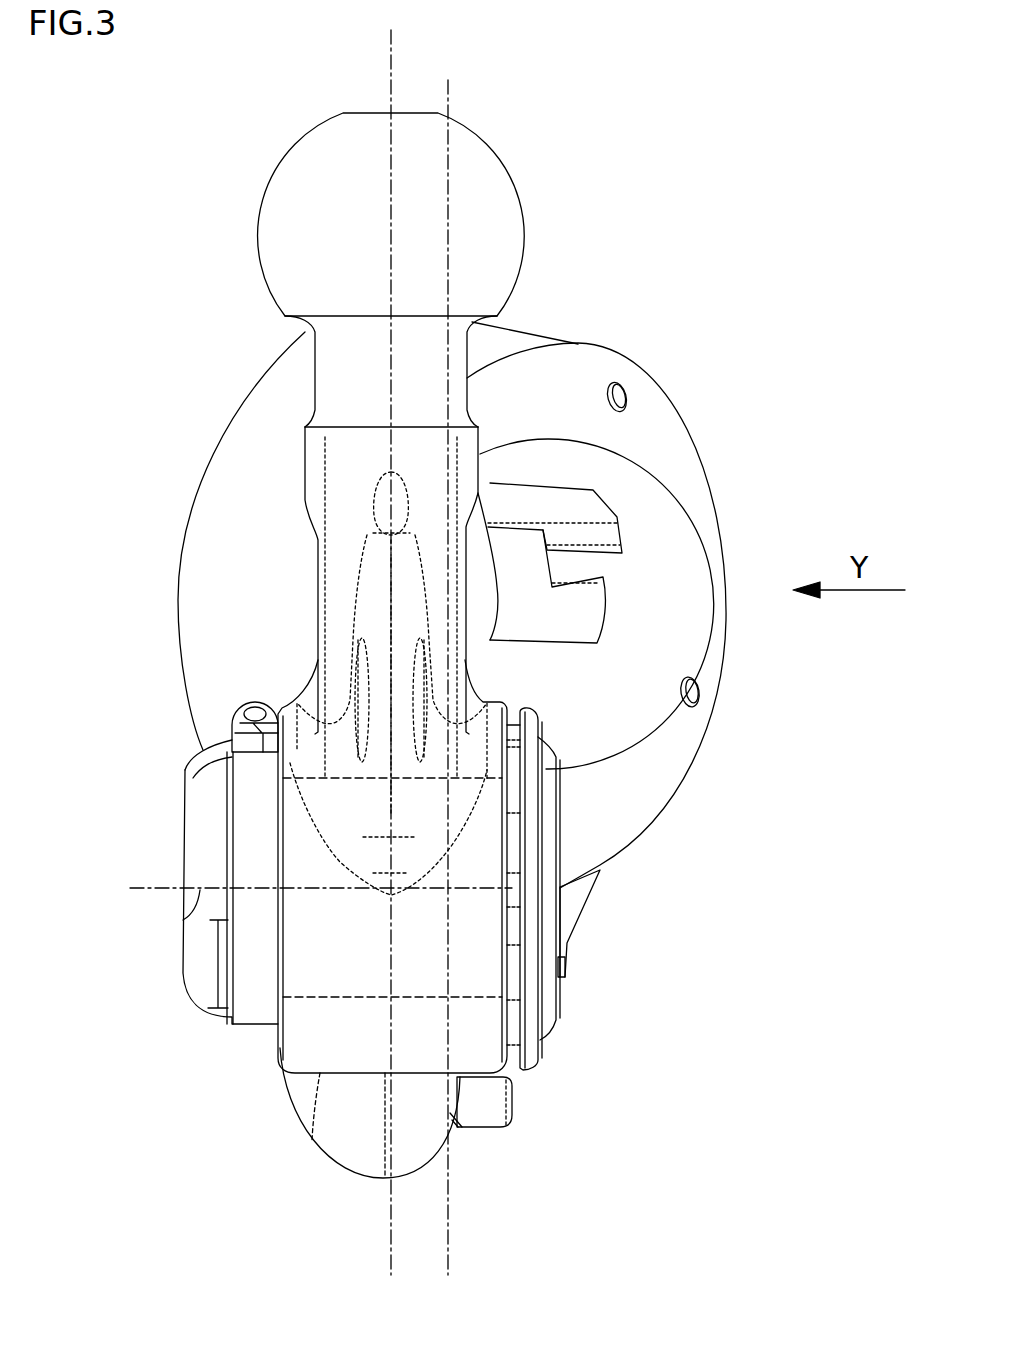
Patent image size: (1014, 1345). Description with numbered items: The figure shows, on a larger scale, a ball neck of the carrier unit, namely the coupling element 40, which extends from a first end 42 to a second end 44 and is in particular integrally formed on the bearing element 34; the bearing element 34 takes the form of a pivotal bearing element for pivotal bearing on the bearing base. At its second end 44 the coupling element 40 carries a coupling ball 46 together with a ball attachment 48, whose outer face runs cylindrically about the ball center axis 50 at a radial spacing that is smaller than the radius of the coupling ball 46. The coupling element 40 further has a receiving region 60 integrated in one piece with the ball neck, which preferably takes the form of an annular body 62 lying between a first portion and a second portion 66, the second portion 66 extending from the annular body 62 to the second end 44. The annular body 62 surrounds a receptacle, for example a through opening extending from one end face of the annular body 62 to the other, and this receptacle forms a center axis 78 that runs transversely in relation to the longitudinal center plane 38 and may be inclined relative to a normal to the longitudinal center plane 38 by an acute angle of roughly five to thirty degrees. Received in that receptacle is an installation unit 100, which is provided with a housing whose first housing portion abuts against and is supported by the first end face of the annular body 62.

The bearing element 34 is at (673, 476).
The longitudinal center plane 38 is at (390, 63).
The coupling element 40 is at (361, 955).
The first end 42 is at (578, 902).
The second end 44 is at (350, 472).
The coupling ball 46 is at (497, 241).
The ball attachment 48 is at (337, 368).
The ball center axis 50 is at (390, 207).
The receiving region 60 is at (378, 1022).
The annular body 62 is at (478, 1037).
The second portion 66 is at (363, 603).
The center axis 78 is at (197, 910).
The installation unit 100 is at (238, 831).